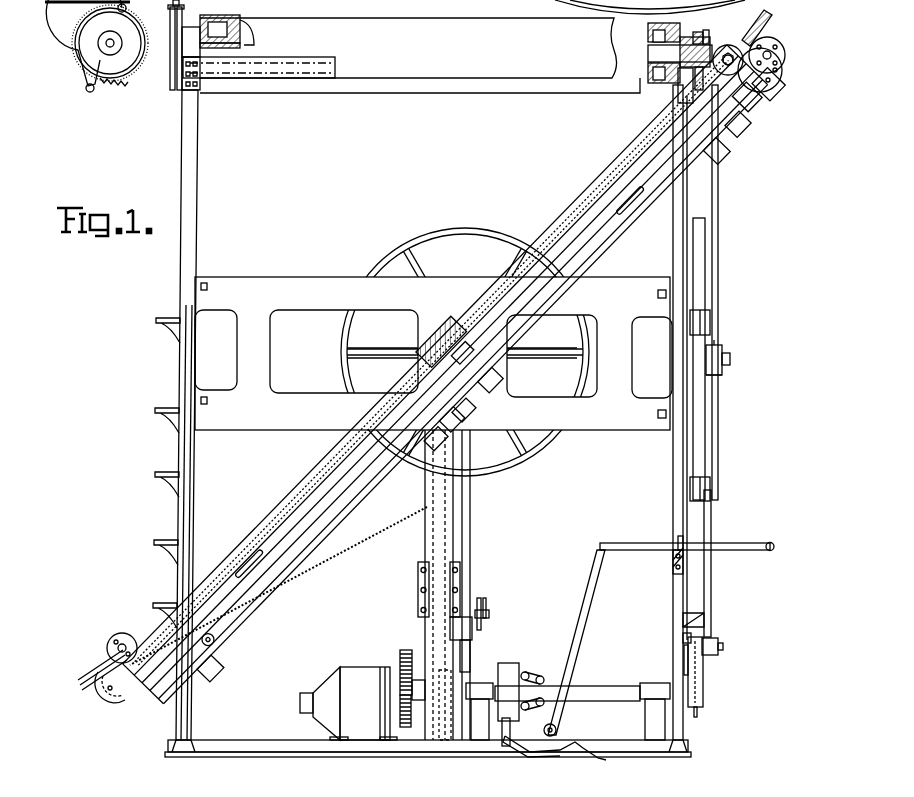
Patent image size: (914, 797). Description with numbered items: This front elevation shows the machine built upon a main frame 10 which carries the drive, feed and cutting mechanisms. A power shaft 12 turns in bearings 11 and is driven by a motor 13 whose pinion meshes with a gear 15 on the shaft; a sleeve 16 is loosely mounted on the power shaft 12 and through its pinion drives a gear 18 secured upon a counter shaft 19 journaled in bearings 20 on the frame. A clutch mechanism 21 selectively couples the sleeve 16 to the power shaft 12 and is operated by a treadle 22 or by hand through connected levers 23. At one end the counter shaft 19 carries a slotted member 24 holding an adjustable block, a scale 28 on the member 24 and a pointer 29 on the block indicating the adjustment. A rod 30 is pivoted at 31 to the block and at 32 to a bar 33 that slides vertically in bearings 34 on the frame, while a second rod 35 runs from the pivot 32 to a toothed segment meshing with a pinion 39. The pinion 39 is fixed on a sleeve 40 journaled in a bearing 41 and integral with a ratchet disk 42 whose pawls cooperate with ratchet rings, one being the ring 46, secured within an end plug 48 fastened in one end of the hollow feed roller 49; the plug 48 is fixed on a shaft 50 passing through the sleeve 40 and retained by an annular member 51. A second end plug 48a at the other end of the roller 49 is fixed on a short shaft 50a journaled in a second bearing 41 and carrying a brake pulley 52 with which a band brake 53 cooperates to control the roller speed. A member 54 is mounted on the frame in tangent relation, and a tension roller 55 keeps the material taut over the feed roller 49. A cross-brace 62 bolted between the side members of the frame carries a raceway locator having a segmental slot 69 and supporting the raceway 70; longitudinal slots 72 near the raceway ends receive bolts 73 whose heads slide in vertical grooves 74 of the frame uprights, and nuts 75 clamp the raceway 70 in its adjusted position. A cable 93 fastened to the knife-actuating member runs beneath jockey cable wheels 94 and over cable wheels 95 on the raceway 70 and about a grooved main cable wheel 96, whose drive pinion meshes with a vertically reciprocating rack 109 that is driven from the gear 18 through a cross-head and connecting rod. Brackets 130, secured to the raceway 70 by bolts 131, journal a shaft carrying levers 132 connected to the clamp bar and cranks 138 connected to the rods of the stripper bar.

The main frame 10 is at (196, 222).
The bearings 11 is at (410, 722).
The power shaft 12 is at (402, 668).
The motor 13 is at (348, 703).
The gear 15 is at (400, 705).
The sleeve 16 is at (484, 672).
The gear 18 is at (442, 752).
The counter shaft 19 is at (598, 693).
The bearings 20 is at (478, 735).
The clutch mechanism 21 is at (547, 682).
The treadle 22 is at (582, 758).
The levers 23 is at (735, 545).
The member 24 is at (688, 653).
The scale 28 is at (703, 670).
The pointer 29 is at (688, 638).
The rod 30 is at (711, 489).
The pivot 31 is at (723, 649).
The pivot 32 is at (730, 360).
The bar 33 is at (705, 284).
The bearings 34 is at (710, 323).
The second rod 35 is at (718, 191).
The pinion 39 is at (709, 32).
The sleeve 40 is at (703, 43).
The bearing 41 is at (683, 86).
The ratchet disk 42 is at (678, 36).
The ratchet ring 46 is at (505, 6).
The end plug 48 is at (648, 35).
The second end plug 48a is at (244, 33).
The feed roller 49 is at (60, 8).
The shaft 50 is at (648, 57).
The short shaft 50a is at (219, 50).
The annular member 51 is at (738, 48).
The brake pulley 52 is at (168, 52).
The band brake 53 is at (92, 62).
The member 54 is at (337, 69).
The tension roller 55 is at (437, 91).
The cross-brace 62 is at (291, 274).
The segmental slot 69 is at (438, 330).
The raceway 70 is at (263, 526).
The longitudinal slots 72 is at (235, 590).
The bolts 73 is at (718, 152).
The vertical grooves 74 is at (186, 520).
The nuts 75 is at (208, 640).
The cable 93 is at (362, 537).
The jockey cable wheels 94 is at (775, 46).
The cable wheels 95 is at (768, 22).
The main cable wheel 96 is at (543, 447).
The rack 109 is at (445, 395).
The brackets 130 is at (762, 96).
The bolts 131 is at (745, 95).
The levers 132 is at (782, 66).
The cranks 138 is at (736, 124).